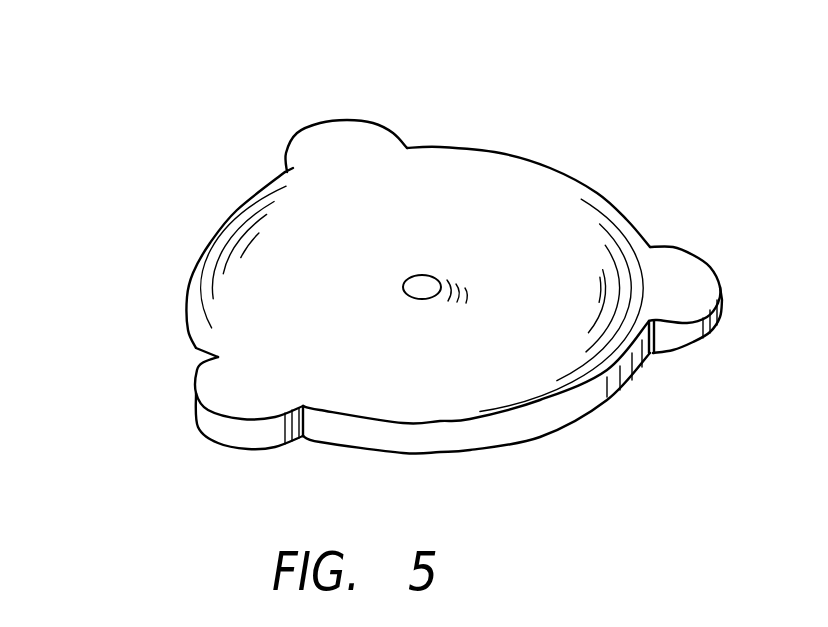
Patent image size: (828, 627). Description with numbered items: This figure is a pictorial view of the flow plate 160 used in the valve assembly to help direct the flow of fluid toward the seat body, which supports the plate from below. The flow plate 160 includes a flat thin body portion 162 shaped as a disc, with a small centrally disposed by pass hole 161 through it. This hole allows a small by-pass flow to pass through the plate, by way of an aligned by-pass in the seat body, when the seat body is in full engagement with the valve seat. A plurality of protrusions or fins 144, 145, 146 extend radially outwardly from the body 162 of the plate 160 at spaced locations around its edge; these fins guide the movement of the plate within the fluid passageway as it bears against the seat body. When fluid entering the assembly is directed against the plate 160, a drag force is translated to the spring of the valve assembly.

The flow plate 160 is at (150, 206).
The fin 146 is at (328, 137).
The by pass hole 161 is at (423, 287).
The body portion 162 is at (543, 202).
The fin 145 is at (707, 280).
The fin 144 is at (230, 392).